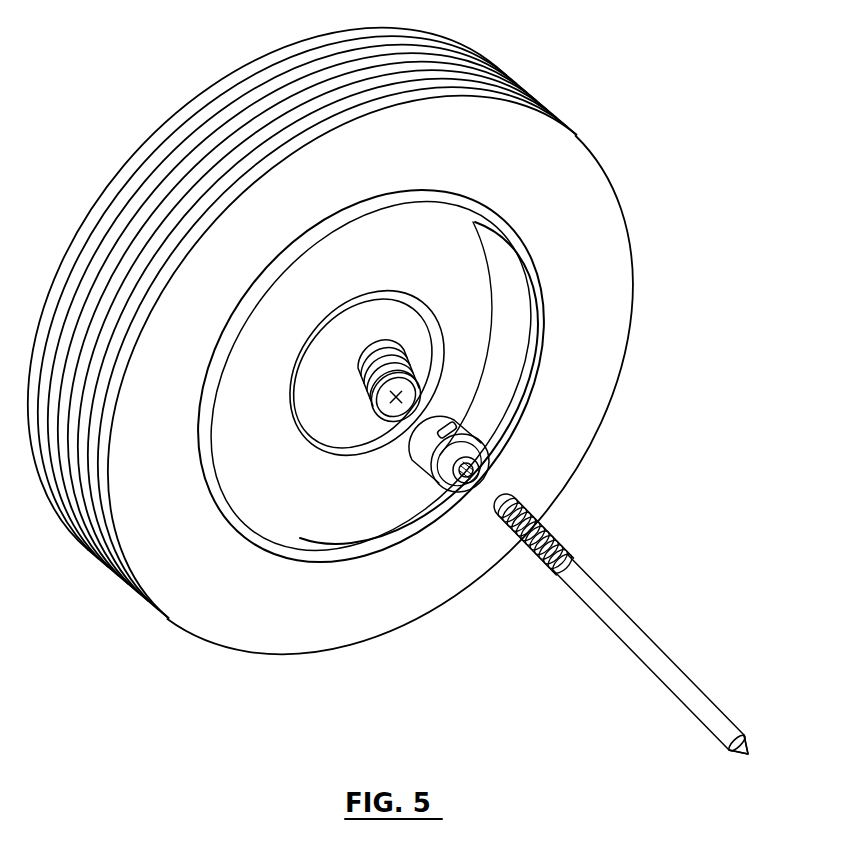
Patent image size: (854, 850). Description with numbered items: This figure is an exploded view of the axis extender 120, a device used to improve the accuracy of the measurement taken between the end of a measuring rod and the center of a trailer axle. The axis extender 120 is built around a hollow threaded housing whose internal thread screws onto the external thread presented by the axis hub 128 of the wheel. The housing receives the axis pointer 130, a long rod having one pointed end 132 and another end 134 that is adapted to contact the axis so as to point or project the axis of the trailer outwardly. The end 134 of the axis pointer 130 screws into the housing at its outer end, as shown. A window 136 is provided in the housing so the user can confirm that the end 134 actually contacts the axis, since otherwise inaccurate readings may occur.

The axis extender 120 is at (560, 668).
The axis hub 128 is at (372, 420).
The axis pointer 130 is at (621, 624).
The pointed end 132 is at (748, 752).
The end of axis pointer 134 is at (505, 500).
The window 136 is at (460, 413).